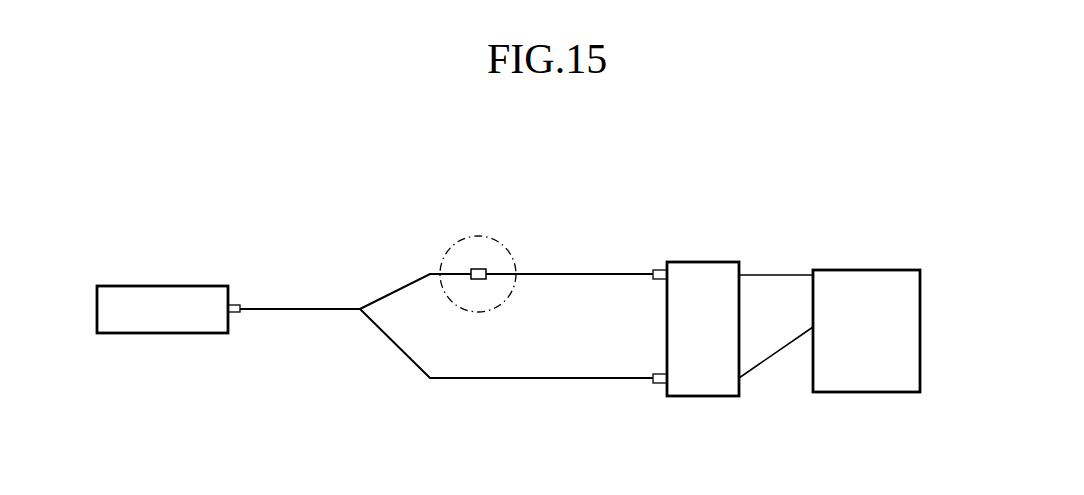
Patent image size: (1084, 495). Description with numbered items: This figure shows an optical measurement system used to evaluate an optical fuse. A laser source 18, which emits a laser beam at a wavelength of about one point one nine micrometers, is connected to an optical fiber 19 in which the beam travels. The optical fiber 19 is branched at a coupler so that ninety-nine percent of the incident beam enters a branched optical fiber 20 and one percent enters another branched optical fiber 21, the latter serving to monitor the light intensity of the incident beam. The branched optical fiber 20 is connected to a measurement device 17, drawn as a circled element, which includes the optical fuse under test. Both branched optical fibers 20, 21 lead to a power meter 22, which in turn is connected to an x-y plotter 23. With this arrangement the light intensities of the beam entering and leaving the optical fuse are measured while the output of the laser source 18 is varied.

The measurement device 17 is at (522, 252).
The laser source 18 is at (133, 286).
The optical fiber 19 is at (298, 309).
The branched optical fiber 20 is at (403, 288).
The branched optical fiber 21 is at (396, 345).
The power meter 22 is at (695, 396).
The x-y plotter 23 is at (853, 392).